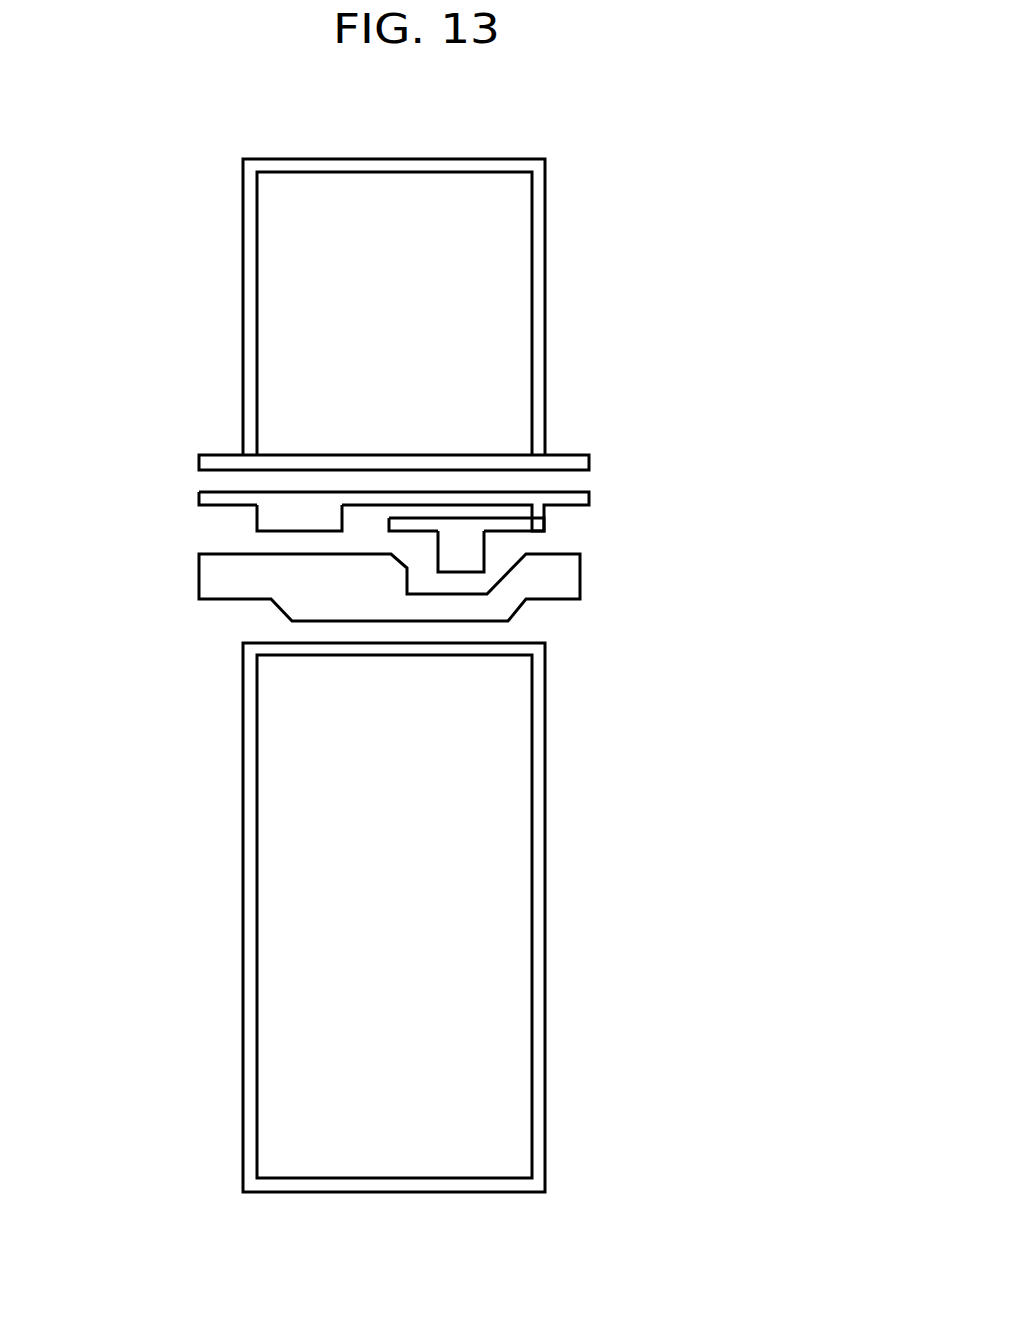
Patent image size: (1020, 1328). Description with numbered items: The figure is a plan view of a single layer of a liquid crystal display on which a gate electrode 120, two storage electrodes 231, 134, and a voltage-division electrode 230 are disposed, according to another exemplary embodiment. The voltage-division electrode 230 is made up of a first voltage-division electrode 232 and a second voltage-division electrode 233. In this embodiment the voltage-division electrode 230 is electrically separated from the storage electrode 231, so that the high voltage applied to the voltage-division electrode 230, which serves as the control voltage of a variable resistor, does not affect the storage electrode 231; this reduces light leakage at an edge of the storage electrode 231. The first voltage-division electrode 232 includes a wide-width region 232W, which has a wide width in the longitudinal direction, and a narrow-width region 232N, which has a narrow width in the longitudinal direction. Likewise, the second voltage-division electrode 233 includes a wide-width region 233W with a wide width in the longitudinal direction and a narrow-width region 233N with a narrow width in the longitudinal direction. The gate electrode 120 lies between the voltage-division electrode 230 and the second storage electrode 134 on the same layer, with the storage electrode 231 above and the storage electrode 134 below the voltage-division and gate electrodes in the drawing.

The gate electrode 120 is at (212, 575).
The storage electrode 134 is at (394, 1183).
The voltage-division electrode 230 is at (183, 487).
The storage electrode 231 is at (400, 166).
The first voltage-division electrode 232 is at (440, 375).
The wide-width region 232W is at (298, 518).
The narrow-width region 232N is at (373, 500).
The second voltage-division electrode 233 is at (697, 510).
The narrow-width region 233N is at (508, 526).
The wide-width region 233W is at (461, 556).